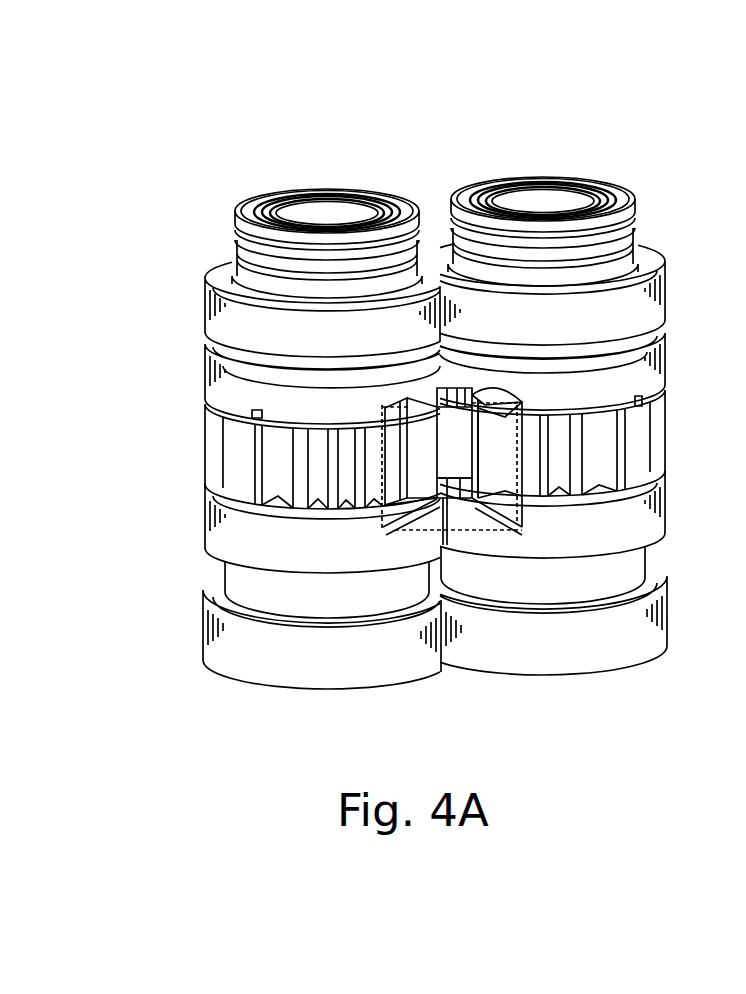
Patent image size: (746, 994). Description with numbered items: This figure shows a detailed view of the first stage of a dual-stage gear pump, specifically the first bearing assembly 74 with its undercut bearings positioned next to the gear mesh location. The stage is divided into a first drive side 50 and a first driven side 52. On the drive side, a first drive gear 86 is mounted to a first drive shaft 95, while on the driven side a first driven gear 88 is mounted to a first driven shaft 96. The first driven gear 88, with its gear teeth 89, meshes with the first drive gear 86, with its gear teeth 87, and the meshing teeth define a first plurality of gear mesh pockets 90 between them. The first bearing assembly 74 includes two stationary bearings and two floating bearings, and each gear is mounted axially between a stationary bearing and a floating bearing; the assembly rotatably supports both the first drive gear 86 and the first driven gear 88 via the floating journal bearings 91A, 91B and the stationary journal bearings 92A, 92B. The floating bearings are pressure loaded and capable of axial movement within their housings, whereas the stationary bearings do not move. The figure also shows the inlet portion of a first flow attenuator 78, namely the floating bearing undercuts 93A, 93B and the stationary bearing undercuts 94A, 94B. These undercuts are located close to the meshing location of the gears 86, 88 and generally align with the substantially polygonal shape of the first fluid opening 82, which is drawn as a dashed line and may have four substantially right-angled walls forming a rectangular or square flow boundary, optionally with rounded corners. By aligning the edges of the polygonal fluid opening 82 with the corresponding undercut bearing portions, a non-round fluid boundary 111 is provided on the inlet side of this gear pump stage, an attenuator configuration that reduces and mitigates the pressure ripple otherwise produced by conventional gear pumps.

The first drive side 50 is at (322, 121).
The first driven side 52 is at (522, 121).
The first bearing assembly 74 is at (610, 131).
The first flow attenuator 78 is at (537, 512).
The polygonal fluid opening 82 is at (440, 565).
The first drive gear 86 is at (196, 471).
The gear teeth 87 is at (300, 472).
The first driven gear 88 is at (676, 426).
The gear teeth 89 is at (618, 466).
The first plurality of gear mesh pockets 90 is at (436, 387).
The floating journal bearing 91A is at (243, 337).
The floating journal bearing 91B is at (590, 327).
The stationary journal bearing 92A is at (314, 660).
The stationary journal bearing 92B is at (580, 655).
The floating bearing undercut 93A is at (383, 419).
The floating bearing undercut 93B is at (520, 394).
The stationary bearing undercut 94A is at (400, 525).
The stationary bearing undercut 94B is at (480, 520).
The first drive shaft 95 is at (272, 205).
The first driven shaft 96 is at (485, 197).
The non-round fluid boundary 111 is at (383, 468).